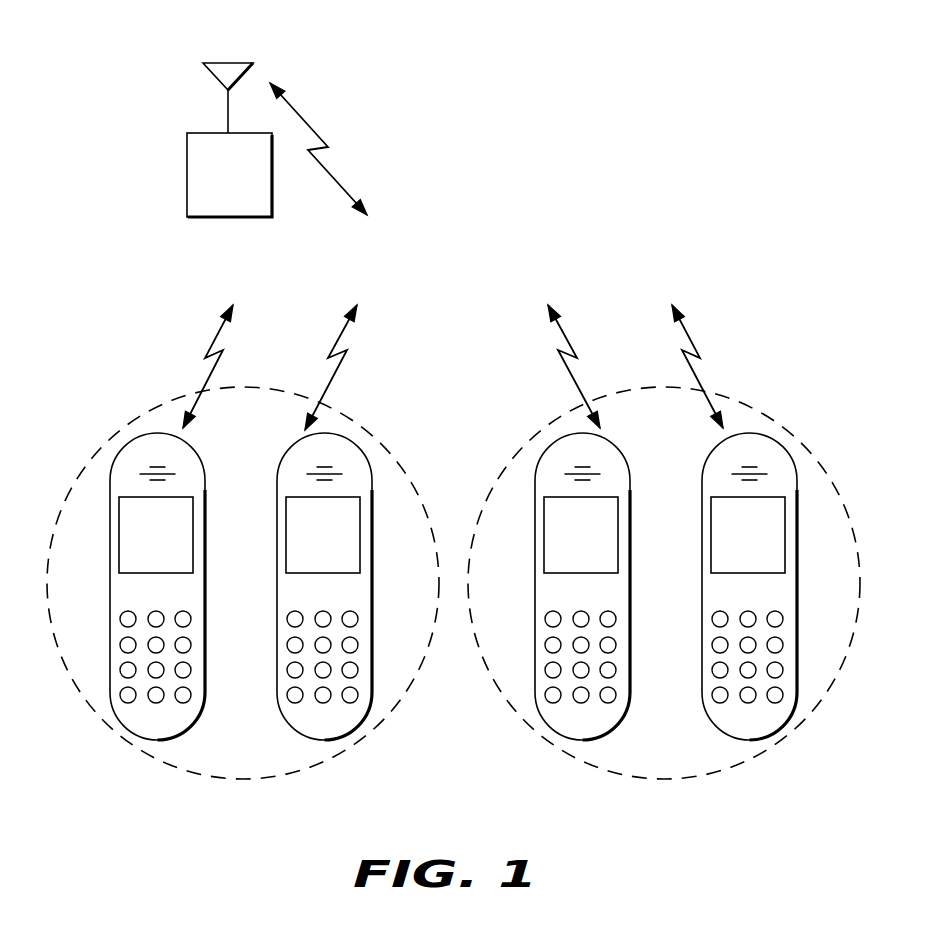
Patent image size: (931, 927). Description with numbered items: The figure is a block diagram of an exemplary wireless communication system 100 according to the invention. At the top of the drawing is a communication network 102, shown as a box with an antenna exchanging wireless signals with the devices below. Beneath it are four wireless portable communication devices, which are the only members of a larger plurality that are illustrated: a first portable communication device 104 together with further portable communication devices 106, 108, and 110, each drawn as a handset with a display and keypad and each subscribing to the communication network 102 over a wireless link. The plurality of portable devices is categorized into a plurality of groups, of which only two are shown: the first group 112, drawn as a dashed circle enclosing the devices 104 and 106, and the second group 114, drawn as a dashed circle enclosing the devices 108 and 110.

The communication system 100 is at (624, 40).
The communication network 102 is at (193, 133).
The first portable communication device 104 is at (110, 587).
The wireless portable communication device 106 is at (277, 587).
The wireless portable communication device 108 is at (535, 587).
The wireless portable communication device 110 is at (702, 587).
The first group 112 is at (130, 422).
The second group 114 is at (554, 422).